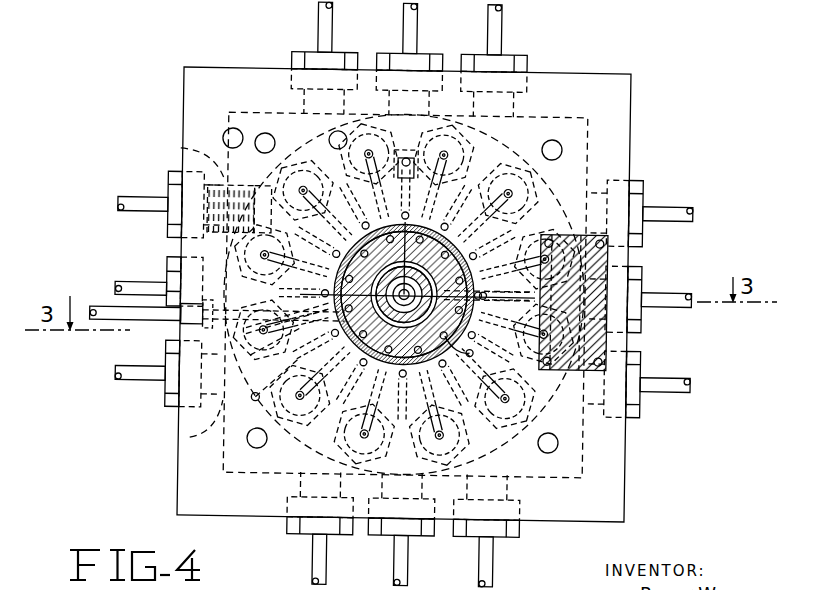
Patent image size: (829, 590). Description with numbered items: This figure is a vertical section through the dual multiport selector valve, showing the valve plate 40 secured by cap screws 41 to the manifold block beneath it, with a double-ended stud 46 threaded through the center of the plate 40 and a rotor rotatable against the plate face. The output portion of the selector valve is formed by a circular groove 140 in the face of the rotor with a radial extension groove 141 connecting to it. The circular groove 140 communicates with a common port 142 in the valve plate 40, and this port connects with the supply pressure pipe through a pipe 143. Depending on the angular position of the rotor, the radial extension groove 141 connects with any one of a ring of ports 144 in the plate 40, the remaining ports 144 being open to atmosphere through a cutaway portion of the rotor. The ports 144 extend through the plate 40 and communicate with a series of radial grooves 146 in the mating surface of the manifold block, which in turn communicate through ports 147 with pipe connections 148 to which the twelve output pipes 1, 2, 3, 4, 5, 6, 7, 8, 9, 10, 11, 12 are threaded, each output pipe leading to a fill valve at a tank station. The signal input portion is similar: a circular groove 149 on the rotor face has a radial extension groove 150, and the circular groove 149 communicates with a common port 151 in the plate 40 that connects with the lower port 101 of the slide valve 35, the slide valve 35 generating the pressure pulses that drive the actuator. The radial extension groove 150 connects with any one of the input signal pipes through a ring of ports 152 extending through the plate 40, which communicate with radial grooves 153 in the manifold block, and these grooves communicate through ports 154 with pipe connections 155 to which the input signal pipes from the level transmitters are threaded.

The output pipe 1 is at (317, 24).
The output pipe 2 is at (124, 202).
The output pipe 3 is at (120, 287).
The output pipe 4 is at (131, 382).
The output pipe 5 is at (319, 562).
The output pipe 6 is at (398, 572).
The output pipe 7 is at (482, 577).
The output pipe 8 is at (686, 386).
The output pipe 9 is at (680, 289).
The output pipe 10 is at (674, 204).
The output pipe 11 is at (499, 22).
The output pipe 12 is at (399, 22).
The slide valve 35 is at (616, 337).
The valve plate 40 is at (176, 88).
The cap screws 41 is at (270, 132).
The double-ended stud 46 is at (403, 172).
The lower port of slide valve 101 is at (470, 334).
The circular groove 140 is at (340, 234).
The radial extension groove 141 is at (336, 326).
The common port 142 is at (226, 311).
The pipe 143 is at (118, 328).
The ring of ports 144 is at (338, 256).
The radial grooves 146 is at (322, 282).
The ports 147 is at (260, 189).
The pipe connections 148 is at (208, 155).
The circular groove 149 is at (480, 294).
The radial extension groove 150 is at (367, 352).
The common port 151 is at (471, 351).
The ring of ports 152 is at (319, 221).
The radial grooves 153 is at (256, 398).
The ports 154 is at (251, 358).
The pipe connections 155 is at (246, 332).